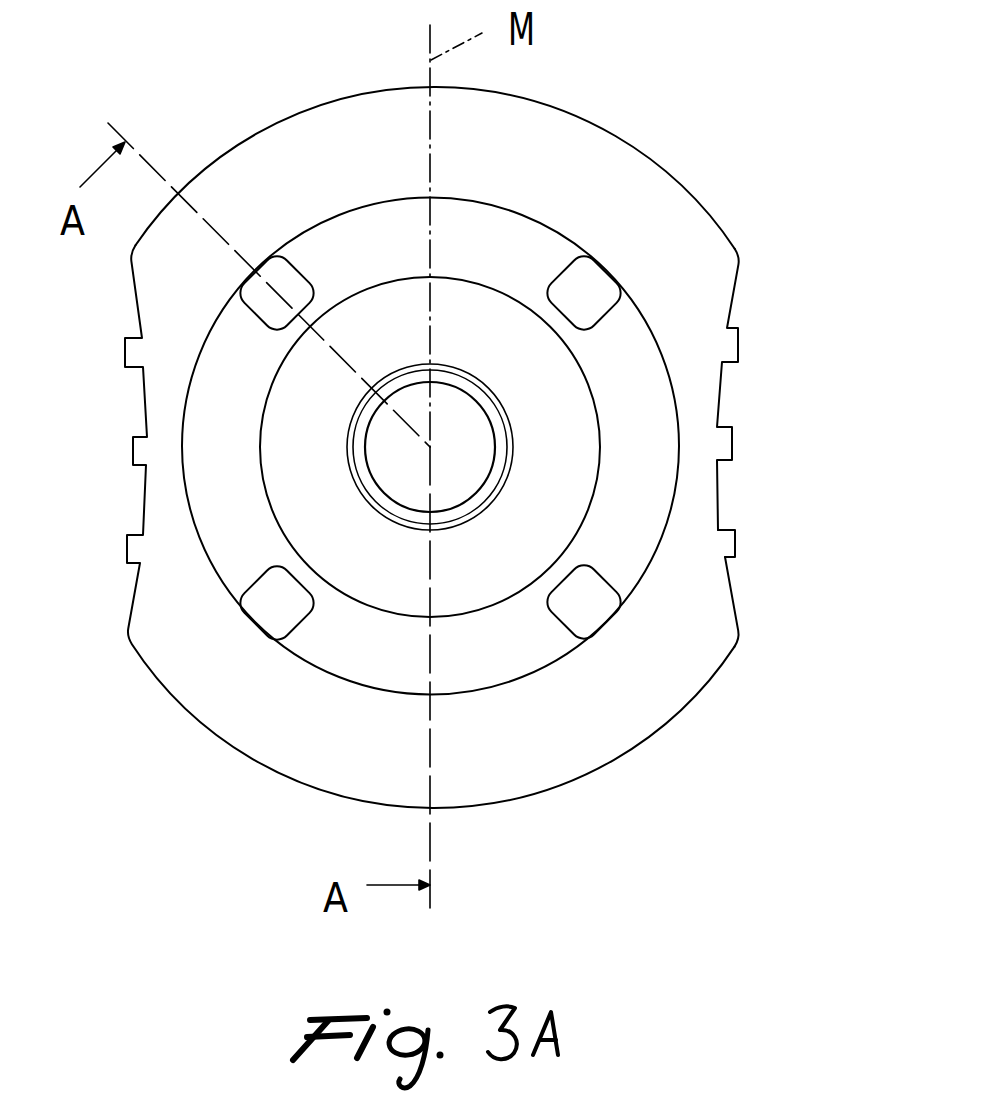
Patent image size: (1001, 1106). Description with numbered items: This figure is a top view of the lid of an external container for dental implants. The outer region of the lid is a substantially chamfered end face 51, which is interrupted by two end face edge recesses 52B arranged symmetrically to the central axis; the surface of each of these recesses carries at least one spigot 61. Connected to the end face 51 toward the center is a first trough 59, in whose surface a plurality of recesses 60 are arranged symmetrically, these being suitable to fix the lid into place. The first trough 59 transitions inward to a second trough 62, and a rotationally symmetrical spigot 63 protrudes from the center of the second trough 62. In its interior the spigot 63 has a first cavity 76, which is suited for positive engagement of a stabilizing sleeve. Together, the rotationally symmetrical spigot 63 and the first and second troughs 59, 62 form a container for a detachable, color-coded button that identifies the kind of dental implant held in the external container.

The chamfered end face 51 is at (552, 128).
The end face edge recess 52B is at (732, 303).
The first trough 59 is at (557, 247).
The recess 60 is at (592, 613).
The spigot 61 is at (740, 543).
The second trough 62 is at (485, 577).
The rotationally symmetrical spigot 63 is at (397, 515).
The first cavity 76 is at (387, 460).